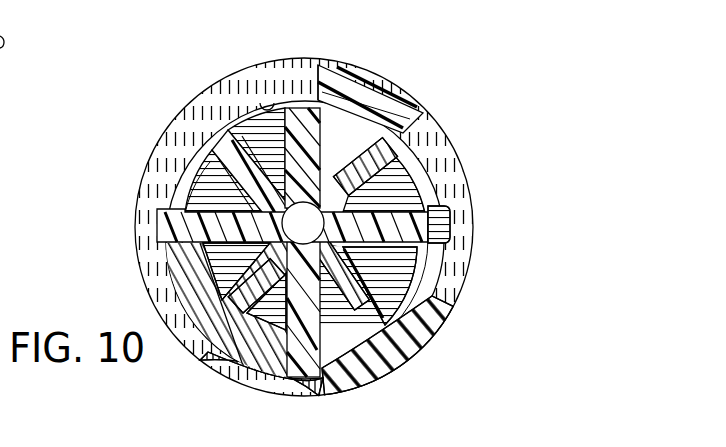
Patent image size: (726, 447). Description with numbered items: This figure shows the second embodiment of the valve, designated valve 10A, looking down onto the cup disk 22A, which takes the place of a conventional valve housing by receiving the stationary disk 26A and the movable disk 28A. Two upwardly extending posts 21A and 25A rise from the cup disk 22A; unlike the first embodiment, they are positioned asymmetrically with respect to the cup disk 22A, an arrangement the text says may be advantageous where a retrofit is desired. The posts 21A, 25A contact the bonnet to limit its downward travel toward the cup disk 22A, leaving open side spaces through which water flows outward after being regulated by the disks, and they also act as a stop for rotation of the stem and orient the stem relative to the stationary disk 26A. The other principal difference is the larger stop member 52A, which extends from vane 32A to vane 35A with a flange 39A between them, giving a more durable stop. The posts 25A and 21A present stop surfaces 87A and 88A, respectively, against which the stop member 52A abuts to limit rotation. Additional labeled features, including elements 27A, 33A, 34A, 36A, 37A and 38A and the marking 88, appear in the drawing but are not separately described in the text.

The sheet numeral 88 is at (44, 11).
The valve 10A is at (408, 88).
The post 21A is at (387, 372).
The cup disk 22A is at (448, 236).
The post 25A is at (425, 110).
The stationary disk 26A is at (260, 103).
The liner 27A is at (203, 200).
The movable disk 28A is at (208, 170).
The vane 32A is at (284, 376).
The right vane 33A is at (450, 232).
The upper vane 34A is at (298, 105).
The vane 35A is at (157, 237).
The lower right vane 36A is at (410, 313).
The upper right piston 37A is at (393, 143).
The upper left vane 38A is at (214, 139).
The flange 39A is at (218, 352).
The stop member 52A is at (175, 276).
The stop surface 87A is at (316, 64).
The stop surface 88A is at (322, 388).